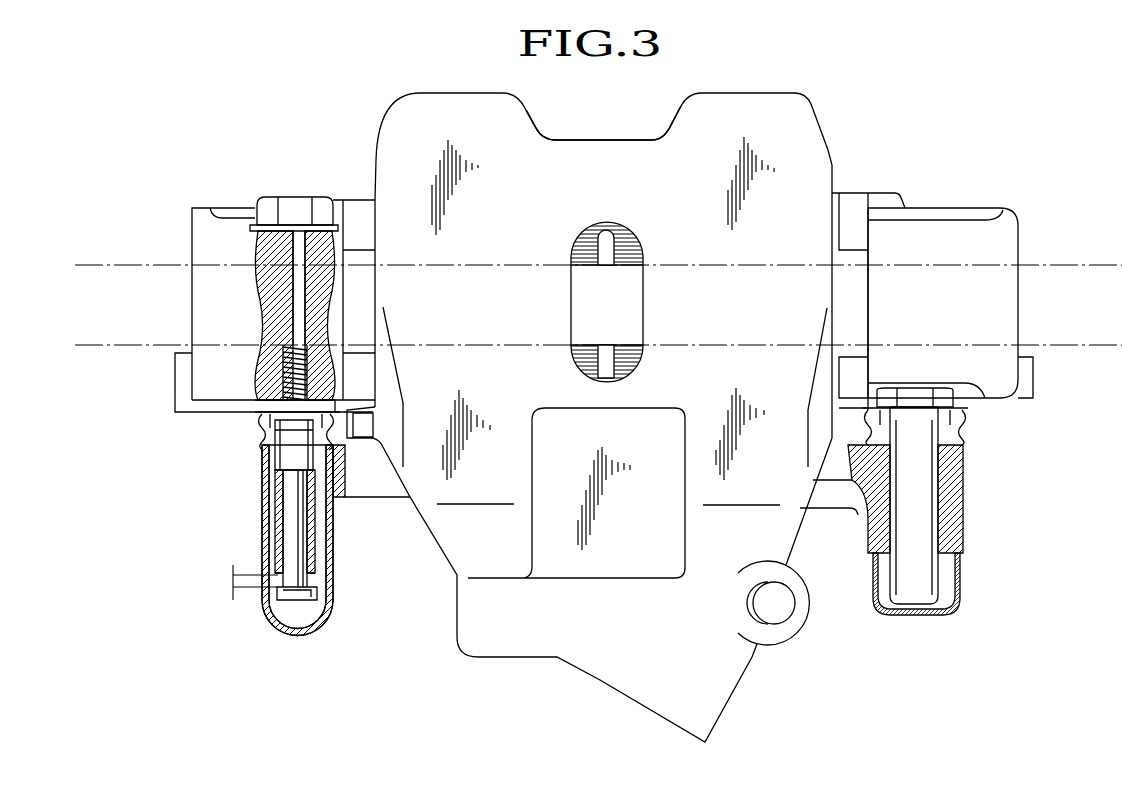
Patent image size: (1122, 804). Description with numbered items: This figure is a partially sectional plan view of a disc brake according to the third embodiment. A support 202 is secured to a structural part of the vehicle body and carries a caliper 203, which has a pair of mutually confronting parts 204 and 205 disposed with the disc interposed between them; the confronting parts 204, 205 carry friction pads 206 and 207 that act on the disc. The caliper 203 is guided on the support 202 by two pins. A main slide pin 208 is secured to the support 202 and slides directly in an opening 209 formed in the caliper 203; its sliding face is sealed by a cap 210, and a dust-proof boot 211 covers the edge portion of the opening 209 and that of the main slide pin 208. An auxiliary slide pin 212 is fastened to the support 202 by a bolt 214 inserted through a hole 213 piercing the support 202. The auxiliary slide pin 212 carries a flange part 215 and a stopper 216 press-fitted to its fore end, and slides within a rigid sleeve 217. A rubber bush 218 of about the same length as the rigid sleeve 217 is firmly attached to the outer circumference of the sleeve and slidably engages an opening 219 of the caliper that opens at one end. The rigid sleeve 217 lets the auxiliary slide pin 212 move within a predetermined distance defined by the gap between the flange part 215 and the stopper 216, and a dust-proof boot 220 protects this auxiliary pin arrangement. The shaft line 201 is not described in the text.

The shaft 201 is at (1056, 272).
The support 202 is at (957, 230).
The caliper 203 is at (812, 95).
The confronting part 204 is at (468, 627).
The confronting part 205 is at (619, 150).
The friction pad 206 is at (582, 366).
The friction pad 207 is at (583, 243).
The main slide pin 208 is at (932, 528).
The opening 209 is at (936, 494).
The cap 210 is at (962, 583).
The dust-proof boot 211 is at (968, 432).
The auxiliary slide pin 212 is at (292, 505).
The hole 213 is at (278, 276).
The bolt 214 is at (294, 238).
The flange part 215 is at (285, 458).
The stopper 216 is at (268, 600).
The rigid sleeve 217 is at (318, 565).
The rubber bush 218 is at (328, 521).
The opening 219 is at (282, 527).
The dust-proof boot 220 is at (262, 426).